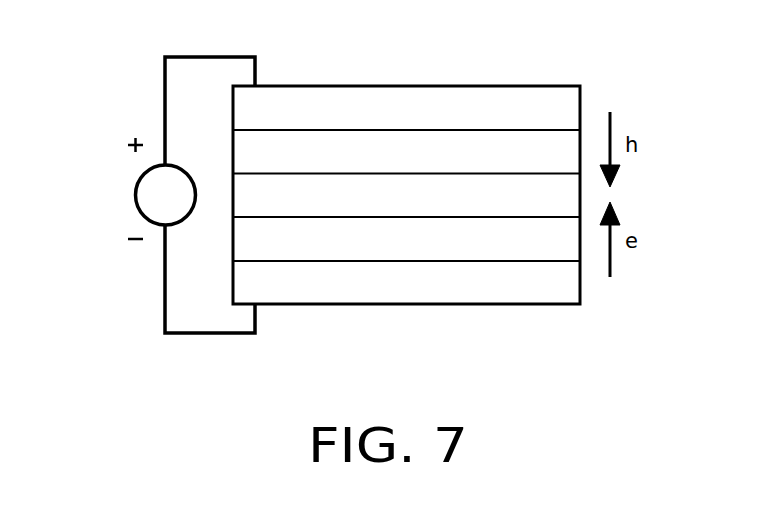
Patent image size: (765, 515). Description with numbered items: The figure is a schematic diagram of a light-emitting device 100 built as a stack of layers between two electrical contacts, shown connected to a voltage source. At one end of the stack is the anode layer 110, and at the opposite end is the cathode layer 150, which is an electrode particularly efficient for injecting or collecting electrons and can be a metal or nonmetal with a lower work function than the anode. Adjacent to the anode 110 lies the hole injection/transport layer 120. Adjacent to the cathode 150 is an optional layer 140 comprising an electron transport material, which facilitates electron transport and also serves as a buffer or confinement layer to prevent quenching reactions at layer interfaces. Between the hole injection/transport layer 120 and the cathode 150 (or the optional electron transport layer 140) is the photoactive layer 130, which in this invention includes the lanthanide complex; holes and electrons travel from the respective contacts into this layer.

The device 100 is at (128, 78).
The anode layer 110 is at (408, 107).
The hole injection/transport layer 120 is at (487, 143).
The photoactive layer 130 is at (533, 195).
The optional layer 140 is at (463, 248).
The cathode layer 150 is at (387, 285).